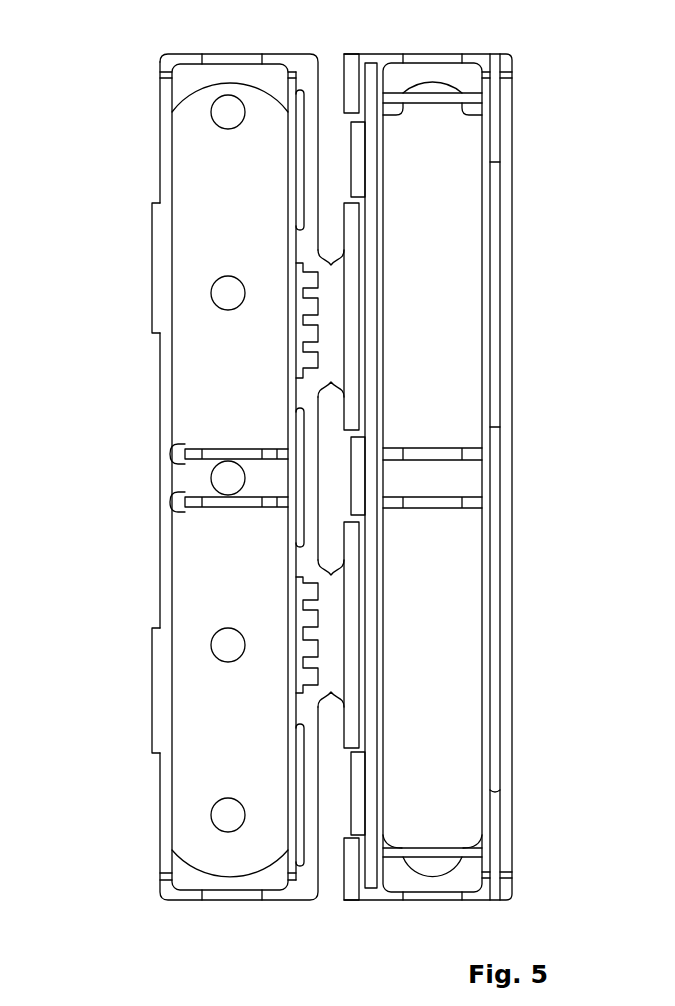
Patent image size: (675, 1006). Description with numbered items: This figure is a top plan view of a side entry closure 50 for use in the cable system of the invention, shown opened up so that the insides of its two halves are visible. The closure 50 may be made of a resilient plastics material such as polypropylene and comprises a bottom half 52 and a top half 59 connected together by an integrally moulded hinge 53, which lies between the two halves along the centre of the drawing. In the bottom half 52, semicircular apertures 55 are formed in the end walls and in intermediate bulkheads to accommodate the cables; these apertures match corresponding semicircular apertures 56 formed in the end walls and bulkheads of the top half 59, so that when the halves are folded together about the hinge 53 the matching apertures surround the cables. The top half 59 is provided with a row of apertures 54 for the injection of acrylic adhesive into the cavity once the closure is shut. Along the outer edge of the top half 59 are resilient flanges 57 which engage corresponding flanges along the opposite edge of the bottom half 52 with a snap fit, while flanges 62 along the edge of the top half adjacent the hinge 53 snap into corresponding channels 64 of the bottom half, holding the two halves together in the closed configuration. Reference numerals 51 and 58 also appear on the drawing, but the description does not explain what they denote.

The side entry closure 50 is at (118, 222).
The base housing 51 is at (293, 890).
The bottom half 52 is at (502, 733).
The hinge 53 is at (327, 303).
The apertures 54 is at (228, 130).
The semicircular apertures 55 is at (442, 57).
The semicircular apertures 56 is at (238, 508).
The resilient flanges 57 is at (505, 284).
The protrusion 58 is at (158, 273).
The top half 59 is at (183, 402).
The flanges 62 is at (358, 802).
The channels 64 is at (303, 845).